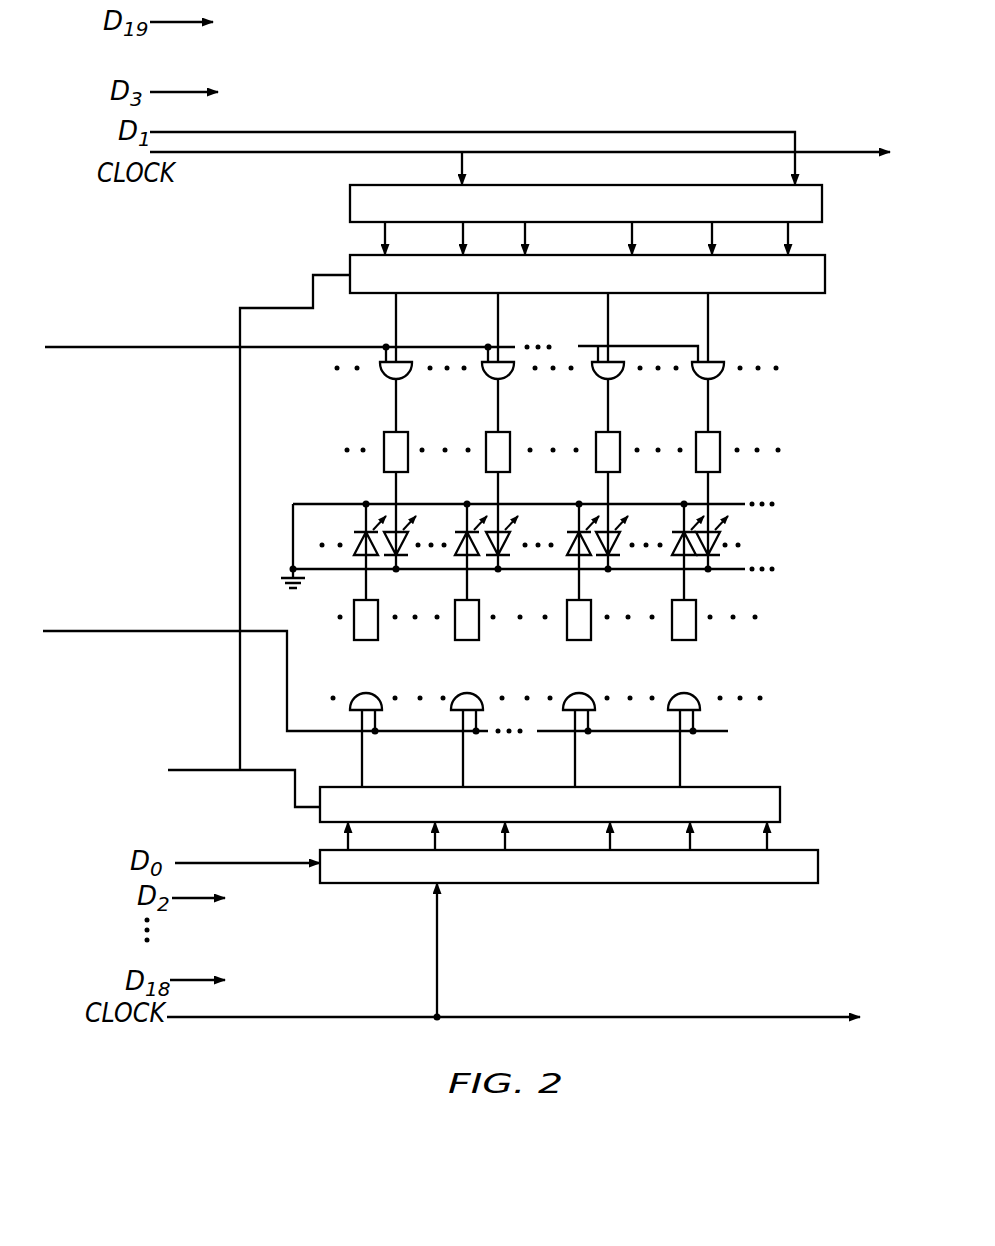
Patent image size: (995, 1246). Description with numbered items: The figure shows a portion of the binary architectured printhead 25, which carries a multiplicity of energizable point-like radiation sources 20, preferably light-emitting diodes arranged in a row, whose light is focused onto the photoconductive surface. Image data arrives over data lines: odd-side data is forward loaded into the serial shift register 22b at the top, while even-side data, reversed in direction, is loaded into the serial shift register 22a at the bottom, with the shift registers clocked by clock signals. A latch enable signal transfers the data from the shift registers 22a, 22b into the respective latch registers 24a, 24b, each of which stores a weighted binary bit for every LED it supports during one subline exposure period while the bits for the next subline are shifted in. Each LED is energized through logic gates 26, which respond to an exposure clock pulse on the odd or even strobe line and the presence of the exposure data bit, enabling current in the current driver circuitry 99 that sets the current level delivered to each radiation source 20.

The energizable point-like radiation sources 20 is at (528, 545).
The serial shift register 22a is at (820, 866).
The serial shift register 22b is at (350, 197).
The latch register 24a is at (783, 803).
The latch register 24b is at (350, 268).
The printhead 25 is at (215, 408).
The logic gates 26 is at (381, 379).
The current driver circuitry 99 is at (384, 458).